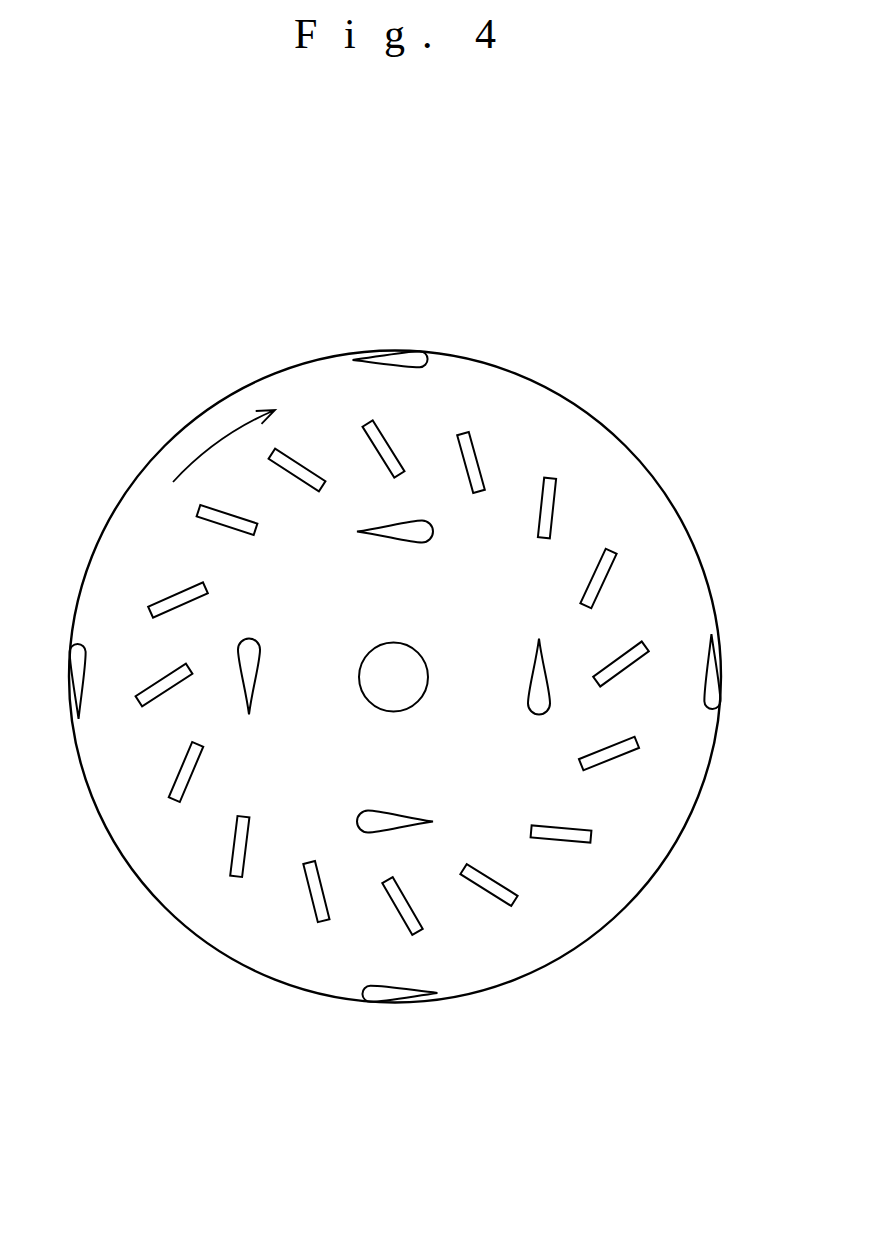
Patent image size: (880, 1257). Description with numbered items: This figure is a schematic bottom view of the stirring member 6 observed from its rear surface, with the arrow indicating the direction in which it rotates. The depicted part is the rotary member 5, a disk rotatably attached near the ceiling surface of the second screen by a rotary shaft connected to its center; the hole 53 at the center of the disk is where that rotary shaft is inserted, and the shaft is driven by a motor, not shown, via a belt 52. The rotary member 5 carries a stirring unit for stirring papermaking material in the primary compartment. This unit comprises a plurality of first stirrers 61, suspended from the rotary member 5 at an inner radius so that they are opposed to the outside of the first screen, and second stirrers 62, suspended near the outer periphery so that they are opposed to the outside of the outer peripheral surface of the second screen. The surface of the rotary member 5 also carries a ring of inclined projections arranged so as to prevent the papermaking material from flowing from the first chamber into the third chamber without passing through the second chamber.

The rotary member 5 is at (537, 587).
The belt 52 is at (472, 457).
The hole 53 is at (382, 695).
The stirring member 6 is at (425, 671).
The first stirrers 61 is at (407, 533).
The second stirrers 62 is at (395, 358).